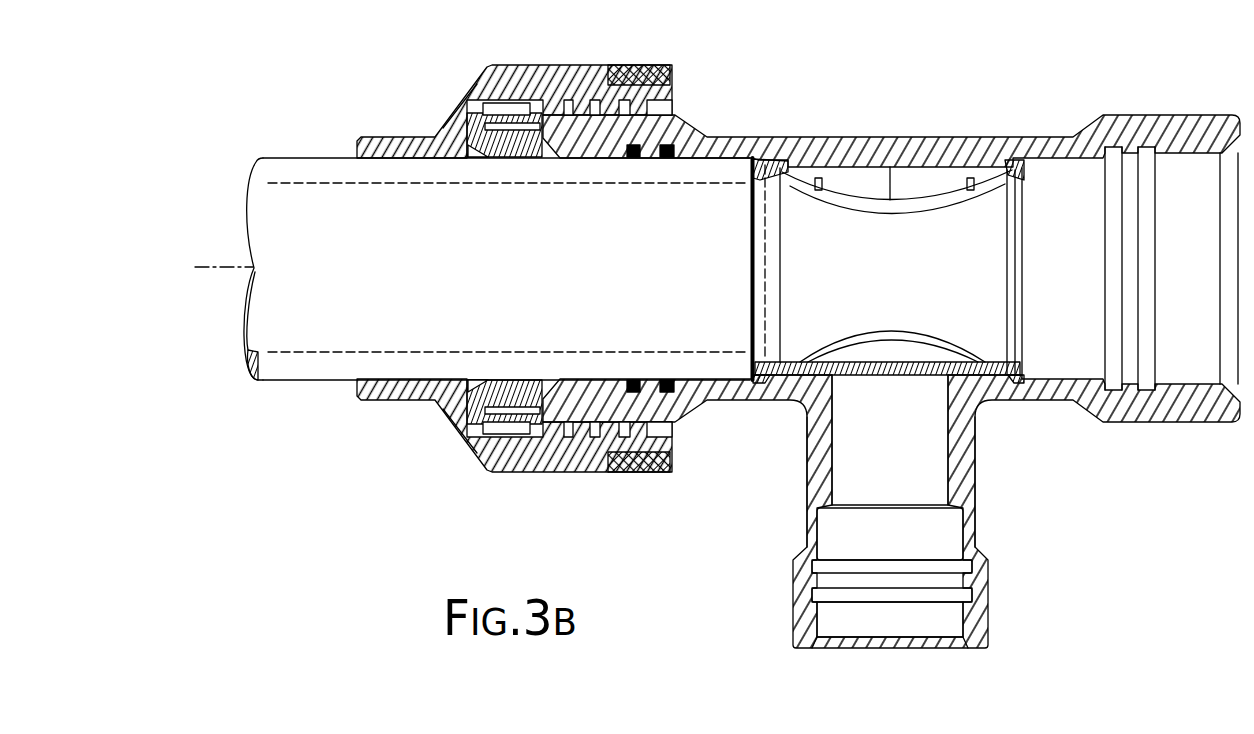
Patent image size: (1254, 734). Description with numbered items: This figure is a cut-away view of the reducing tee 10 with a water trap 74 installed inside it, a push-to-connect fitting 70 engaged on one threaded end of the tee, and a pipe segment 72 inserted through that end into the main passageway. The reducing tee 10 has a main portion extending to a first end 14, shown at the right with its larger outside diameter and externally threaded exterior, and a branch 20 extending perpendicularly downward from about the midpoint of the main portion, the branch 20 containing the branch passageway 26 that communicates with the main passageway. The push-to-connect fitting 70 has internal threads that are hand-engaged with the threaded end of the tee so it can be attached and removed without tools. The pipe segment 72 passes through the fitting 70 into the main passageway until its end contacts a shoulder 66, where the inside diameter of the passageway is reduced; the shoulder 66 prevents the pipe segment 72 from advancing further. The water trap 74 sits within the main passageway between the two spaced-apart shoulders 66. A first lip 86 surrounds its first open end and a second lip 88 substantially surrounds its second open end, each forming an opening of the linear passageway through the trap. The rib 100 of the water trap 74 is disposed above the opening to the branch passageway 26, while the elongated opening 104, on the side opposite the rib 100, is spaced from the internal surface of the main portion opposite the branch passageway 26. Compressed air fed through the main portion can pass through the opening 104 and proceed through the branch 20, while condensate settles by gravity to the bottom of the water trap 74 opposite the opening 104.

The reducing tee 10 is at (910, 138).
The first end 14 is at (1240, 117).
The branch 20 is at (975, 488).
The branch passageway 26 is at (907, 459).
The shoulder 66 is at (770, 162).
The push-to-connect fitting 70 is at (540, 65).
The pipe segment 72 is at (341, 172).
The water trap 74 is at (795, 226).
The first lip 86 is at (765, 165).
The second lip 88 is at (1020, 172).
The rib 100 is at (885, 336).
The opening 104 is at (890, 208).